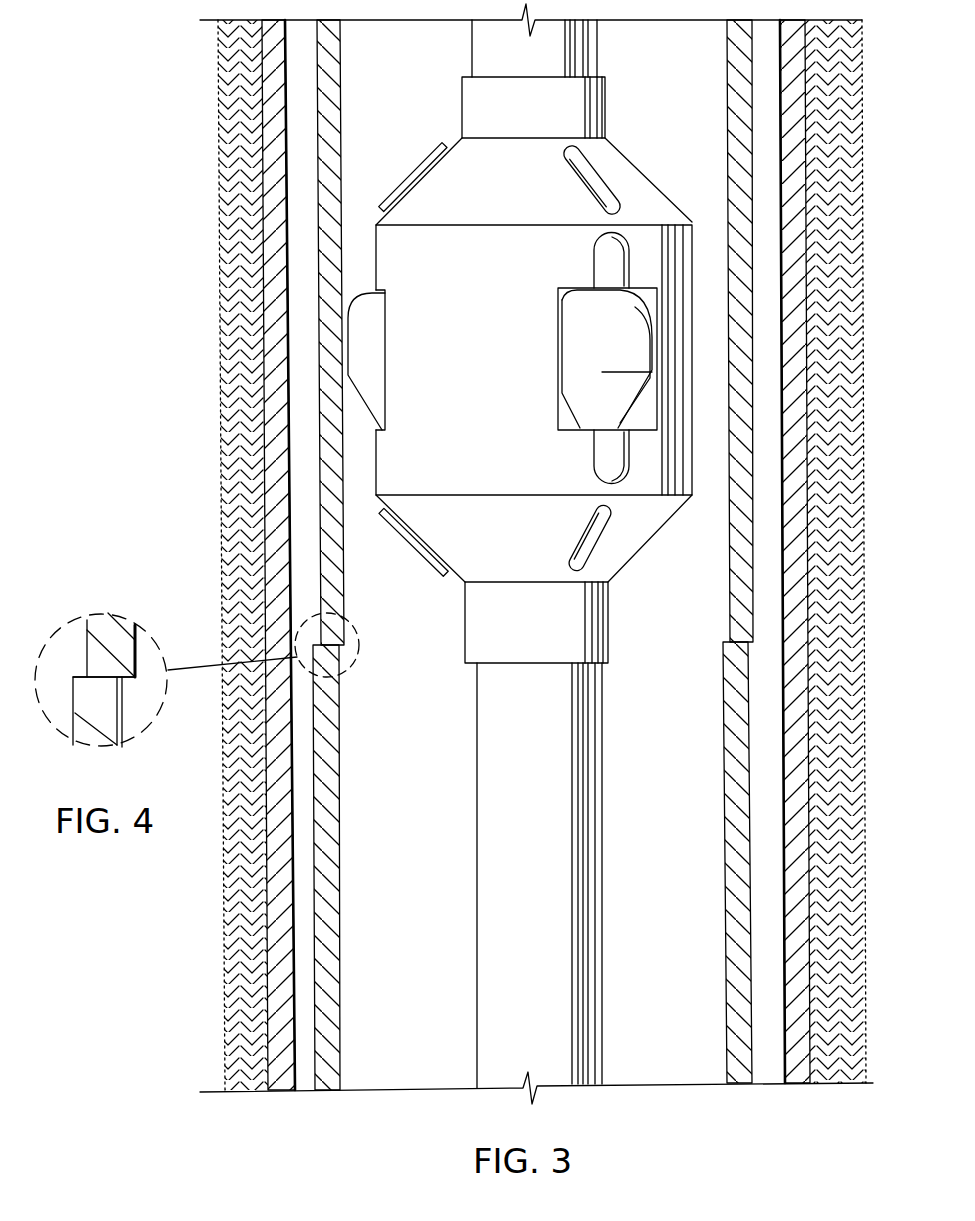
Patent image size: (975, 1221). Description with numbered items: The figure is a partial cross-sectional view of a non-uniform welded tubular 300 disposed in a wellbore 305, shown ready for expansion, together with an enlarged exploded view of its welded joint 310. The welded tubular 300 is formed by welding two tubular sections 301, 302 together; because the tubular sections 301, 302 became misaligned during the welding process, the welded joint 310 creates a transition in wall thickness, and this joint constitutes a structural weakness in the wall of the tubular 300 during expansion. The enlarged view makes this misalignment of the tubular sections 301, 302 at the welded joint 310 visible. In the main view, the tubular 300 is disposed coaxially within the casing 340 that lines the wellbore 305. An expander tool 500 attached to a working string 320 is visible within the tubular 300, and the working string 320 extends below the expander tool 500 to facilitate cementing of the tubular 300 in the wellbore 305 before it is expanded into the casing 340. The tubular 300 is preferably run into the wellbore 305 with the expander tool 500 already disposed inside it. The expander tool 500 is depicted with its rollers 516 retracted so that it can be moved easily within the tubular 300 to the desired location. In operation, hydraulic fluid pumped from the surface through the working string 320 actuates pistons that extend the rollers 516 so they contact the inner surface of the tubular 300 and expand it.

In FIG. 3, the welded tubular 300 is at (455, 555).
In FIG. 3, the tubular section 301 is at (318, 410).
In FIG. 4, the tubular section 301 is at (88, 670).
In FIG. 3, the tubular section 302 is at (316, 912).
In FIG. 4, the tubular section 302 is at (73, 723).
In FIG. 3, the wellbore 305 is at (256, 104).
In FIG. 3, the welded joint 310 is at (300, 630).
In FIG. 4, the welded joint 310 is at (76, 678).
In FIG. 3, the working string 320 is at (598, 49).
In FIG. 3, the casing 340 is at (282, 192).
In FIG. 3, the expander tool 500 is at (525, 369).
In FIG. 3, the rollers 516 is at (374, 323).